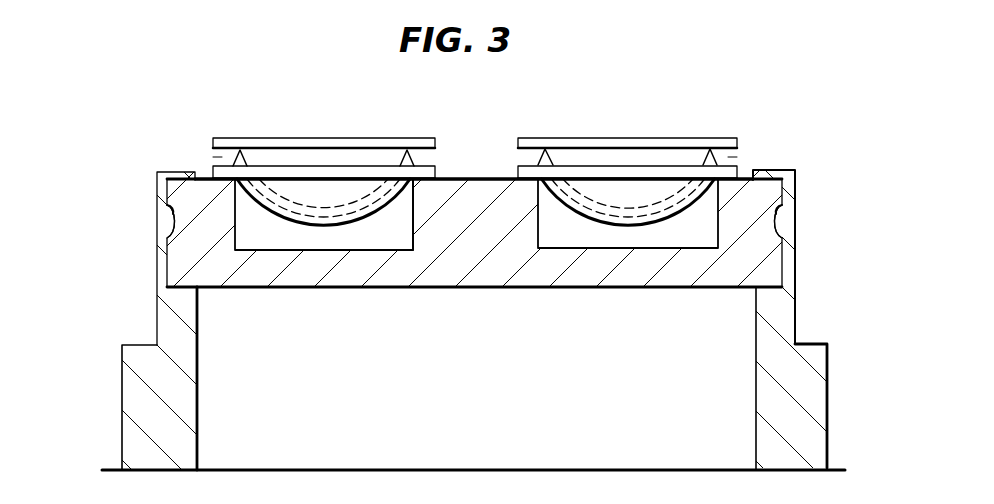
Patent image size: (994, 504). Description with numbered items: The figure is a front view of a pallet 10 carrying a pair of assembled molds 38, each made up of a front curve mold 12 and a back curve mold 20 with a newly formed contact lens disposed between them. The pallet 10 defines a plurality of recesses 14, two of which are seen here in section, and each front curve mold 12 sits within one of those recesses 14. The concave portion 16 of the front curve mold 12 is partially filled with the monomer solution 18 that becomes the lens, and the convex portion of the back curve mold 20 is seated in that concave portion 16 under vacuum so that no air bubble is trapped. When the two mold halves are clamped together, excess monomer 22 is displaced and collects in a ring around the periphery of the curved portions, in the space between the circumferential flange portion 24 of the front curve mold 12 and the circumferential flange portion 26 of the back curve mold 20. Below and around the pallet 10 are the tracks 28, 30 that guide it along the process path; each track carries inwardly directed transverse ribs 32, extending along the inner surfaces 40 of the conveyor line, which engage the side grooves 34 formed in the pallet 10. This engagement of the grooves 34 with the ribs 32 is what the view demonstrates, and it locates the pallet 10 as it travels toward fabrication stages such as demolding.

The pallet 10 is at (487, 170).
The front curve mold 12 is at (373, 223).
The recesses 14 is at (398, 237).
The concave portion 16 is at (270, 200).
The monomer solution 18 is at (346, 212).
The back curve mold 20 is at (313, 160).
The excess monomer 22 is at (410, 160).
The circumferential flange portion 24 is at (213, 172).
The circumferential flange portion 26 is at (240, 140).
The track 28 is at (122, 406).
The track 30 is at (827, 410).
The transverse ribs 32 is at (170, 225).
The side grooves 34 is at (170, 226).
The assembled molds 38 is at (220, 158).
The inner surfaces 40 is at (172, 273).